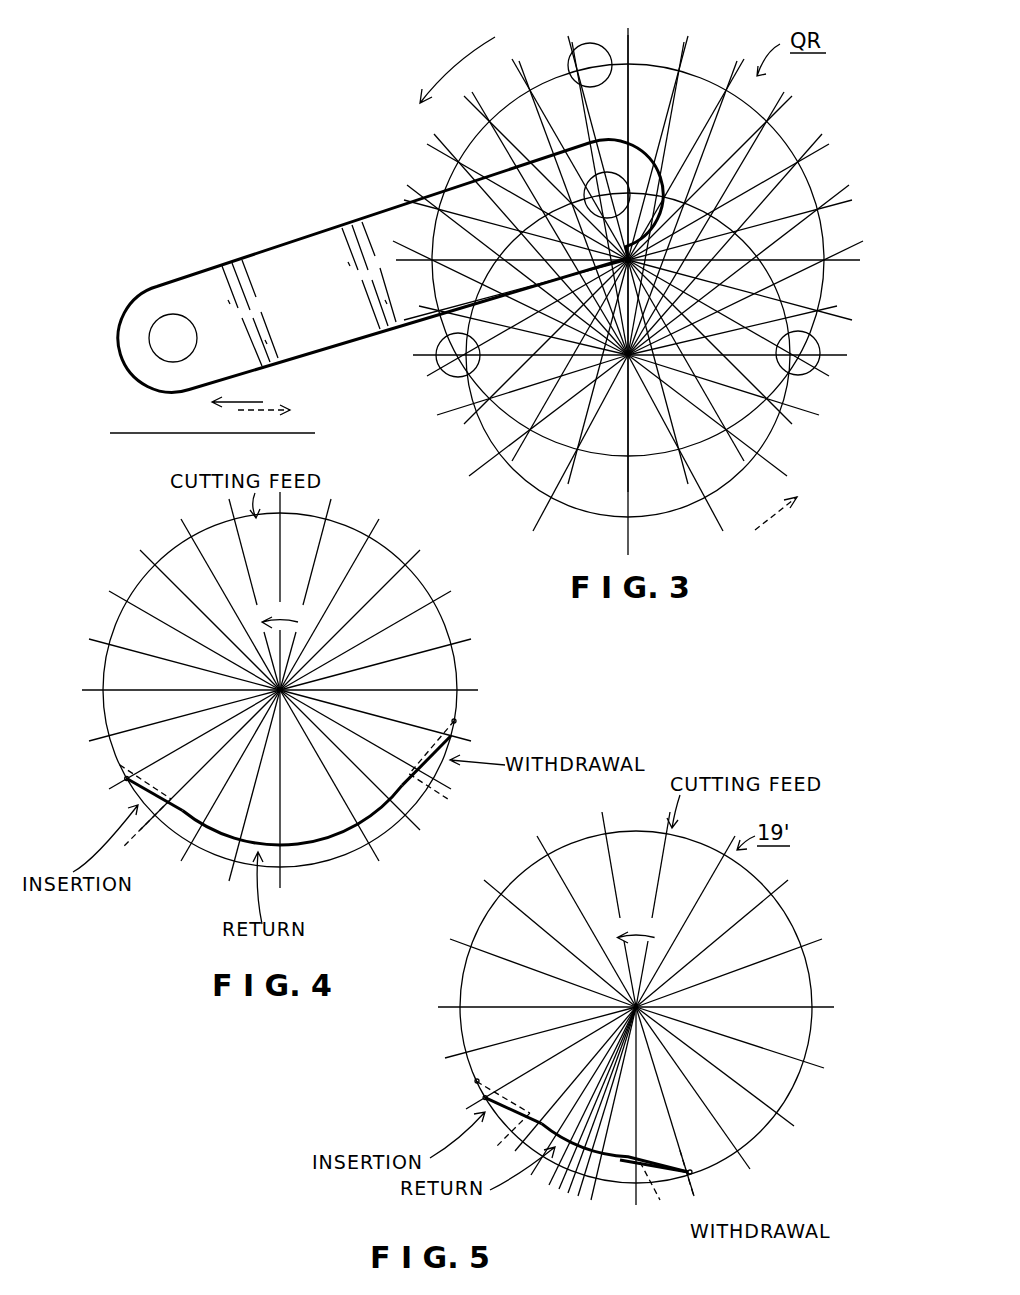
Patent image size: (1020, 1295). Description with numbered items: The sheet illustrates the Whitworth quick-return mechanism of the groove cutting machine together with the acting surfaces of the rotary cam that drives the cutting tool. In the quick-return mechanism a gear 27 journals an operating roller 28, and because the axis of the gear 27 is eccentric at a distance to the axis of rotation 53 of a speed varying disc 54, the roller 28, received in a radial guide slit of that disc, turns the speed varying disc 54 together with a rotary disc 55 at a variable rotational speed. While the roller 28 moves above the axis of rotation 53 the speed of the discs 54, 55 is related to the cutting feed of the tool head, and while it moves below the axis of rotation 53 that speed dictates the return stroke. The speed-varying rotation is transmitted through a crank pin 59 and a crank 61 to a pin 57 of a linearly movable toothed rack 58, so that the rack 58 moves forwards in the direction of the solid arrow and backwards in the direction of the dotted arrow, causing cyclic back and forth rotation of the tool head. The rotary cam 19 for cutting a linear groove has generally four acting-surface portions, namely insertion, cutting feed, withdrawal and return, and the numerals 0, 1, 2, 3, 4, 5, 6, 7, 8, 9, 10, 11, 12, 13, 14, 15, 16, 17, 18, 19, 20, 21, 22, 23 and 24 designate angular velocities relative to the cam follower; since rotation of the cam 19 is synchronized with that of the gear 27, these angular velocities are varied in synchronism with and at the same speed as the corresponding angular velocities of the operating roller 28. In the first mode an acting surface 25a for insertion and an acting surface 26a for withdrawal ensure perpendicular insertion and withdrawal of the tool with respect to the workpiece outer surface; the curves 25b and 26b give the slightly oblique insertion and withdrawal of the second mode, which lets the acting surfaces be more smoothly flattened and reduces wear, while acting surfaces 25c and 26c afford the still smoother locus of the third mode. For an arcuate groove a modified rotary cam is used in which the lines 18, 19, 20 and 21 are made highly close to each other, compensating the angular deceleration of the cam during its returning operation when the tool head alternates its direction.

In FIG. 3, the angular velocity line 0 is at (810, 356).
In FIG. 4, the angular velocity line 0 is at (184, 753).
In FIG. 5, the angular velocity line 0 is at (541, 1067).
In FIG. 3, the angular velocity line 1 is at (740, 290).
In FIG. 4, the angular velocity line 1 is at (175, 723).
In FIG. 5, the angular velocity line 1 is at (532, 1038).
In FIG. 3, the angular velocity line 2 is at (744, 251).
In FIG. 4, the angular velocity line 2 is at (170, 690).
In FIG. 5, the angular velocity line 2 is at (527, 1004).
In FIG. 3, the angular velocity line 3 is at (740, 227).
In FIG. 4, the angular velocity line 3 is at (175, 659).
In FIG. 5, the angular velocity line 3 is at (533, 968).
In FIG. 3, the angular velocity line 4 is at (728, 200).
In FIG. 4, the angular velocity line 4 is at (187, 629).
In FIG. 5, the angular velocity line 4 is at (549, 934).
In FIG. 3, the angular velocity line 5 is at (710, 178).
In FIG. 4, the angular velocity line 5 is at (204, 611).
In FIG. 5, the angular velocity line 5 is at (575, 910).
In FIG. 3, the angular velocity line 6 is at (686, 159).
In FIG. 4, the angular velocity line 6 is at (225, 593).
In FIG. 5, the angular velocity line 6 is at (608, 899).
In FIG. 3, the angular velocity line 7 is at (658, 148).
In FIG. 4, the angular velocity line 7 is at (252, 585).
In FIG. 5, the angular velocity line 7 is at (653, 898).
In FIG. 3, the angular velocity line 8 is at (616, 144).
In FIG. 4, the angular velocity line 8 is at (281, 586).
In FIG. 5, the angular velocity line 8 is at (685, 909).
In FIG. 3, the angular velocity line 9 is at (598, 148).
In FIG. 4, the angular velocity line 9 is at (311, 583).
In FIG. 5, the angular velocity line 9 is at (718, 934).
In FIG. 3, the angular velocity line 10 is at (570, 159).
In FIG. 4, the angular velocity line 10 is at (341, 594).
In FIG. 5, the angular velocity line 10 is at (742, 960).
In FIG. 3, the angular velocity line 11 is at (546, 178).
In FIG. 4, the angular velocity line 11 is at (361, 609).
In FIG. 5, the angular velocity line 11 is at (749, 1003).
In FIG. 3, the angular velocity line 12 is at (526, 202).
In FIG. 4, the angular velocity line 12 is at (383, 637).
In FIG. 5, the angular velocity line 12 is at (744, 1045).
In FIG. 3, the angular velocity line 13 is at (516, 230).
In FIG. 4, the angular velocity line 13 is at (392, 659).
In FIG. 5, the angular velocity line 13 is at (731, 1072).
In FIG. 3, the angular velocity line 14 is at (512, 274).
In FIG. 4, the angular velocity line 14 is at (397, 694).
In FIG. 5, the angular velocity line 14 is at (707, 1100).
In FIG. 3, the angular velocity line 15 is at (516, 290).
In FIG. 4, the angular velocity line 15 is at (392, 725).
In FIG. 5, the angular velocity line 15 is at (676, 1113).
In FIG. 3, the angular velocity line 16 is at (527, 324).
In FIG. 4, the angular velocity line 16 is at (381, 751).
In FIG. 5, the angular velocity line 16 is at (641, 1119).
In FIG. 3, the angular velocity line 17 is at (546, 342).
In FIG. 4, the angular velocity line 17 is at (362, 773).
In FIG. 5, the angular velocity line 17 is at (610, 1116).
In FIG. 3, the angular velocity line 18 is at (570, 360).
In FIG. 4, the angular velocity line 18 is at (339, 791).
In FIG. 5, the angular velocity line 18 is at (599, 1110).
In FIG. 3, the rotary cam 19 is at (598, 372).
In FIG. 4, the rotary cam 19 is at (496, 568).
In FIG. 5, the rotary cam 19 is at (597, 1122).
In FIG. 3, the angular velocity line 20 is at (643, 376).
In FIG. 4, the angular velocity line 20 is at (281, 804).
In FIG. 5, the angular velocity line 20 is at (552, 1195).
In FIG. 3, the angular velocity line 21 is at (669, 372).
In FIG. 4, the angular velocity line 21 is at (246, 801).
In FIG. 5, the angular velocity line 21 is at (548, 1190).
In FIG. 3, the angular velocity line 22 is at (687, 360).
In FIG. 4, the angular velocity line 22 is at (220, 789).
In FIG. 5, the angular velocity line 22 is at (572, 1105).
In FIG. 3, the angular velocity line 23 is at (710, 342).
In FIG. 4, the angular velocity line 23 is at (207, 774).
In FIG. 5, the angular velocity line 23 is at (561, 1091).
In FIG. 4, the angular velocity line 24 is at (103, 805).
In FIG. 5, the angular velocity line 24 is at (445, 1119).
In FIG. 4, the acting surface for insertion 25a is at (160, 795).
In FIG. 5, the acting surface for insertion 25a is at (498, 1116).
In FIG. 4, the acting surface curve for oblique insertion 25b is at (130, 835).
In FIG. 5, the acting surface curve for oblique insertion 25b is at (492, 1088).
In FIG. 4, the acting surface for insertion 25c is at (128, 780).
In FIG. 5, the acting surface for insertion 25c is at (492, 1135).
In FIG. 4, the acting surface for withdrawal 26a is at (435, 768).
In FIG. 5, the acting surface for withdrawal 26a is at (622, 1152).
In FIG. 4, the acting surface curve for oblique withdrawal 26b is at (433, 742).
In FIG. 5, the acting surface curve for oblique withdrawal 26b is at (700, 1163).
In FIG. 4, the acting surface for withdrawal 26c is at (420, 800).
In FIG. 5, the acting surface for withdrawal 26c is at (630, 1172).
In FIG. 3, the gear 27 is at (693, 72).
In FIG. 3, the operating roller 28 is at (605, 52).
In FIG. 3, the axis of rotation 53 is at (628, 295).
In FIG. 3, the speed varying disc 54 is at (661, 355).
In FIG. 3, the rotary disc 55 is at (766, 447).
In FIG. 3, the pin 57 is at (182, 322).
In FIG. 3, the toothed rack 58 is at (146, 416).
In FIG. 3, the crank pin 59 is at (628, 260).
In FIG. 3, the crank 61 is at (290, 252).